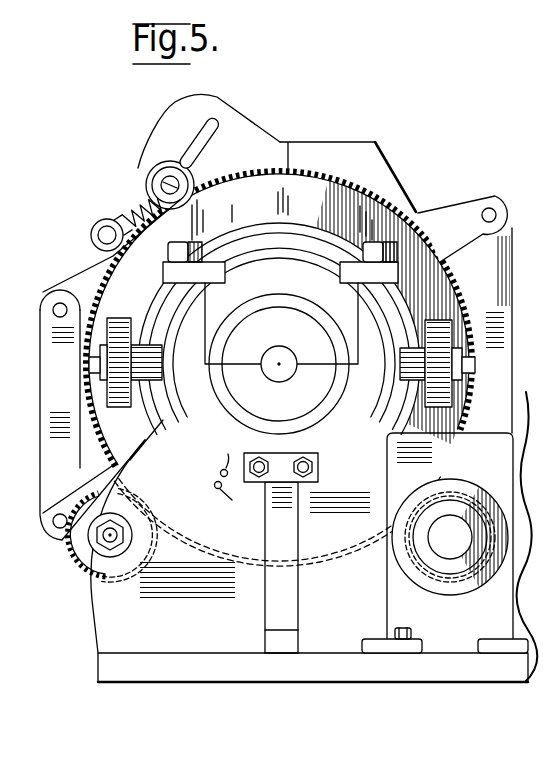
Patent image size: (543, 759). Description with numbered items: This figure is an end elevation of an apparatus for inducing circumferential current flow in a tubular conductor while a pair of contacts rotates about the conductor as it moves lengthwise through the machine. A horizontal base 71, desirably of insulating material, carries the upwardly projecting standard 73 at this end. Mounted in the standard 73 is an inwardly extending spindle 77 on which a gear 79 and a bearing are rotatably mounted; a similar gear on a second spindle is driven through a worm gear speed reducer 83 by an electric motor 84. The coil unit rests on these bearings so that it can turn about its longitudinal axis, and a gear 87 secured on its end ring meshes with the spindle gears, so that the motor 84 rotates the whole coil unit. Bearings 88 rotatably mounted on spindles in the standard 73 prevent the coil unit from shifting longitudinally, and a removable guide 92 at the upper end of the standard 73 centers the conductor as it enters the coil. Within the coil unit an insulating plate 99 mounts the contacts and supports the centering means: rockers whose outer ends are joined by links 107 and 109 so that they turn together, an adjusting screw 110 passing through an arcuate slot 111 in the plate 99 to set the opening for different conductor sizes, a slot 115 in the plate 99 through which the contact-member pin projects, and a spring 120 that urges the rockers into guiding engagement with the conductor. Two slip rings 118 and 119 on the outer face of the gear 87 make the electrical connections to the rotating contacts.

The horizontal base 71 is at (173, 653).
The standard 73 is at (92, 620).
The spindle 77 is at (110, 540).
The gear 79 is at (80, 563).
The worm gear speed reducer 83 is at (403, 569).
The electric motor 84 is at (517, 592).
The gear 87 is at (90, 276).
The bearings 88 is at (133, 393).
The guide 92 is at (255, 400).
The plate 99 is at (388, 163).
The link 107 is at (465, 314).
The link 109 is at (42, 430).
The screw 110 is at (147, 181).
The arcuate slot 111 is at (183, 149).
The slot 115 is at (276, 160).
The slip ring 118 is at (263, 212).
The slip ring 119 is at (321, 247).
The spring 120 is at (130, 209).